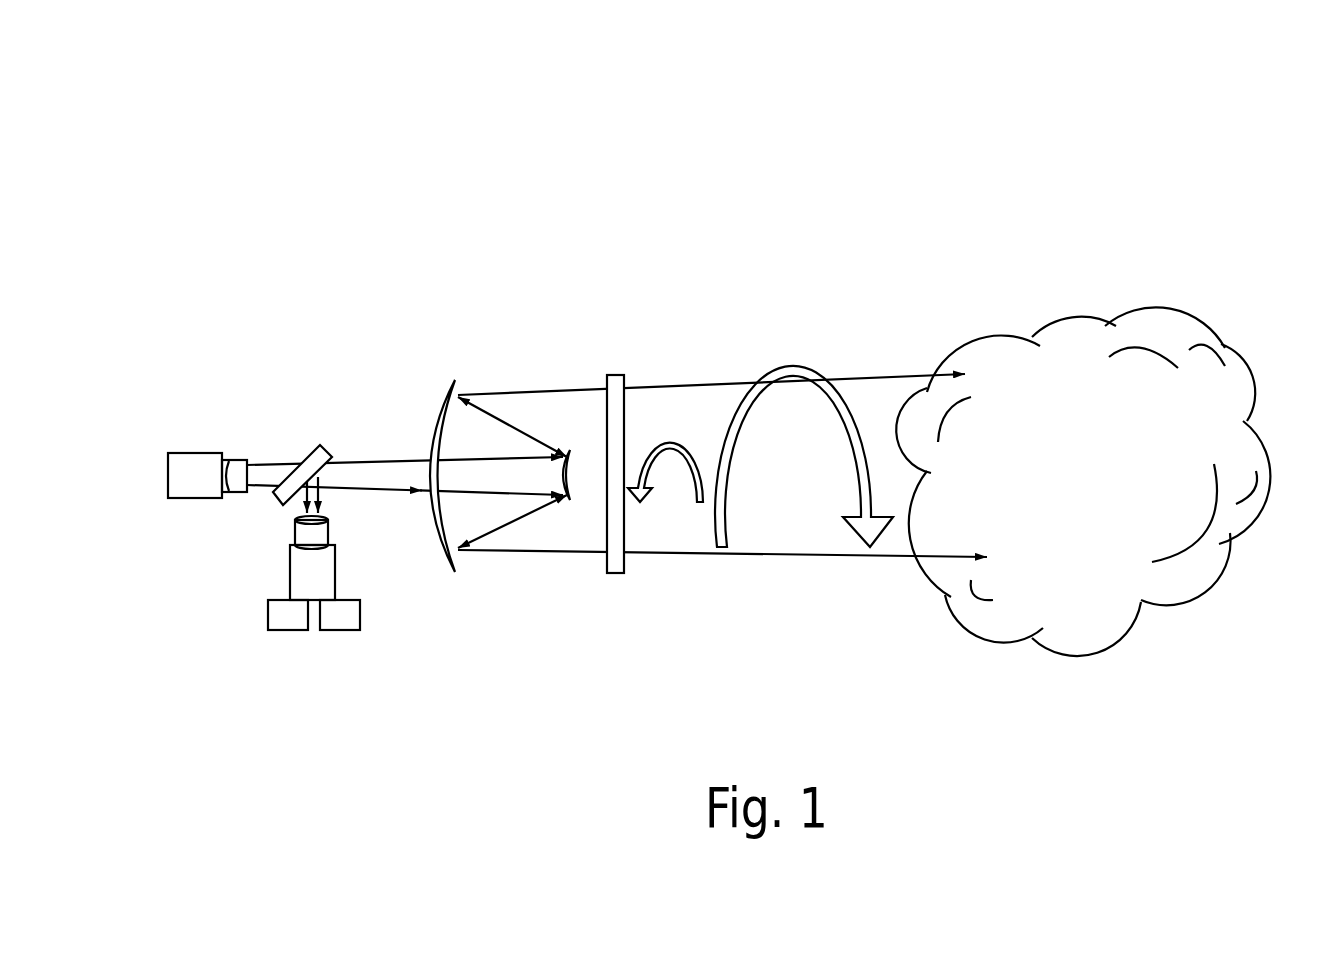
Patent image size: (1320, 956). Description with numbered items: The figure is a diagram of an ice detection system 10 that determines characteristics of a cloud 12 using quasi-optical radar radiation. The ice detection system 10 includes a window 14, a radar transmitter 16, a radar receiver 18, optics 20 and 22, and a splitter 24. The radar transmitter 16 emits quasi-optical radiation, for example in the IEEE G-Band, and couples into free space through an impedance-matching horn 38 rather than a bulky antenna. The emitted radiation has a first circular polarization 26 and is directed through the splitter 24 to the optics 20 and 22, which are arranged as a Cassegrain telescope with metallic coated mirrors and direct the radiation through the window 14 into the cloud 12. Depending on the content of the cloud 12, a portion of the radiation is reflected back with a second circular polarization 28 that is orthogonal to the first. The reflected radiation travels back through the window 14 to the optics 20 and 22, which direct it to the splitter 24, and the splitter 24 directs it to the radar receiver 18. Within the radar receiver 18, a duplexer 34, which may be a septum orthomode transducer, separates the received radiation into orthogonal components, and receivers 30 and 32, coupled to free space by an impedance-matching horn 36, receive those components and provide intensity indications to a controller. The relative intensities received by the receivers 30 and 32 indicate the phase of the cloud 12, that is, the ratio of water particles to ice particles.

The ice detection system 10 is at (1125, 148).
The cloud 12 is at (1216, 324).
The window 14 is at (614, 375).
The radar transmitter 16 is at (190, 453).
The radar receiver 18 is at (301, 611).
The optic 20 is at (571, 472).
The optic 22 is at (452, 390).
The splitter 24 is at (326, 445).
The first circular polarization 26 is at (820, 405).
The second circular polarization 28 is at (670, 442).
The receiver 30 is at (268, 630).
The receiver 32 is at (360, 630).
The duplexer 34 is at (335, 572).
The impedance-matching horn 36 is at (330, 532).
The impedance-matching horn 38 is at (235, 458).